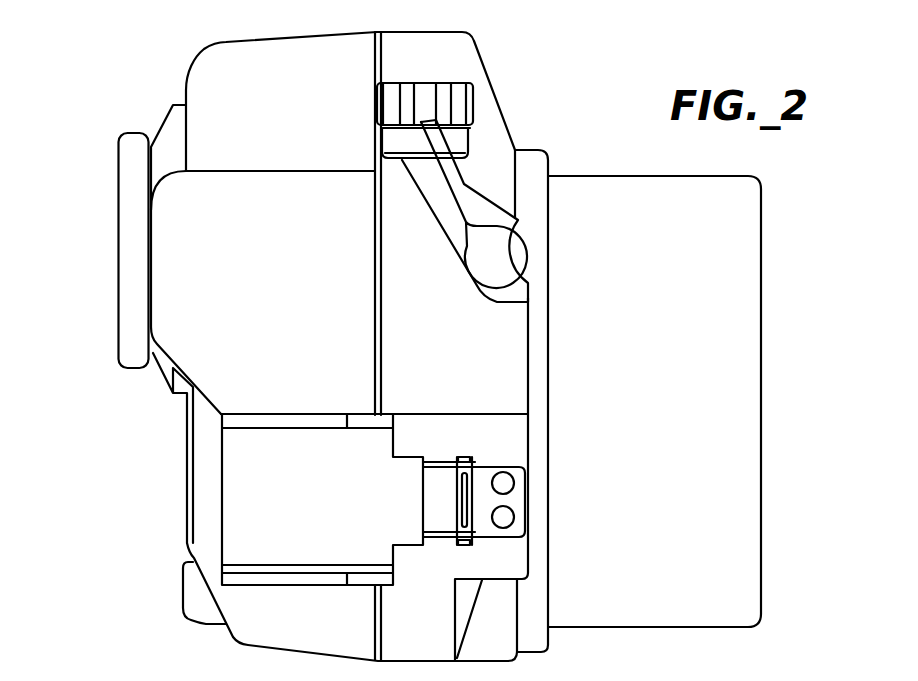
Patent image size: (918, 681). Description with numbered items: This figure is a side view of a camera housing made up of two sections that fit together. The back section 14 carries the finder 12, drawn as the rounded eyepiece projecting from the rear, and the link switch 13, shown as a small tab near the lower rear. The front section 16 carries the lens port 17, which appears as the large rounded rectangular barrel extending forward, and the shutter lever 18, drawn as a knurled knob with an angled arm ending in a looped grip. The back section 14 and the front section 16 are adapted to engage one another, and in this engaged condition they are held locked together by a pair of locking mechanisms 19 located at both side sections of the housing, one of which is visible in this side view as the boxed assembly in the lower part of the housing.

The finder 12 is at (138, 268).
The link switch 13 is at (183, 600).
The back section 14 is at (202, 220).
The front section 16 is at (520, 373).
The lens port 17 is at (718, 285).
The shutter lever 18 is at (450, 182).
The locking mechanism 19 is at (318, 530).